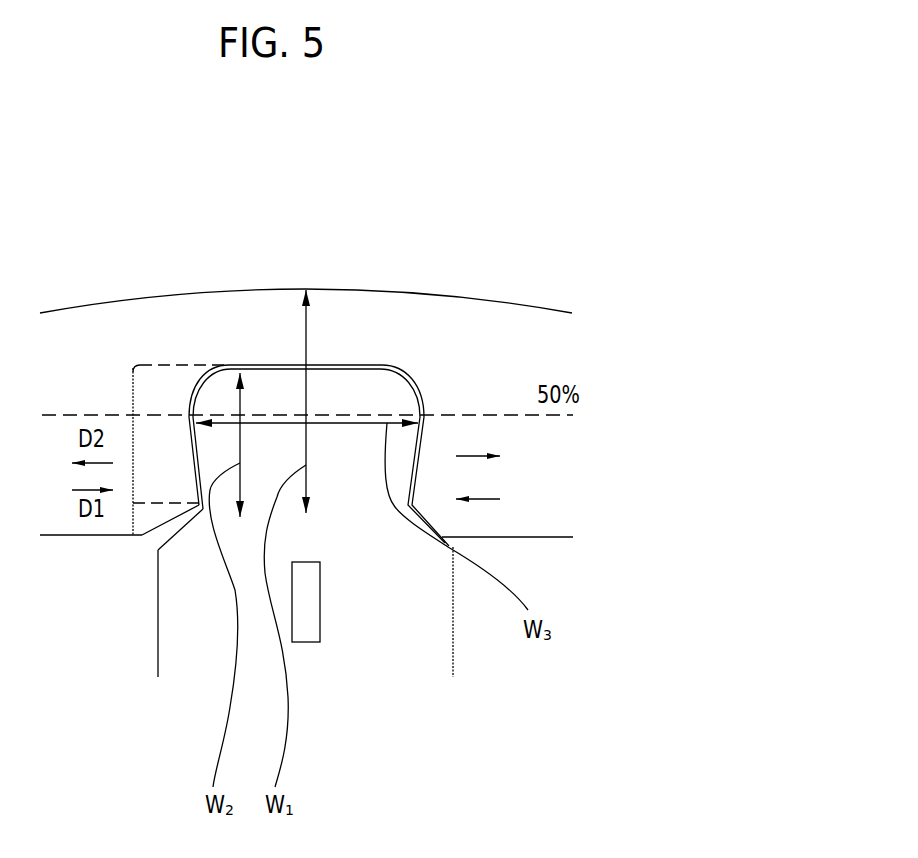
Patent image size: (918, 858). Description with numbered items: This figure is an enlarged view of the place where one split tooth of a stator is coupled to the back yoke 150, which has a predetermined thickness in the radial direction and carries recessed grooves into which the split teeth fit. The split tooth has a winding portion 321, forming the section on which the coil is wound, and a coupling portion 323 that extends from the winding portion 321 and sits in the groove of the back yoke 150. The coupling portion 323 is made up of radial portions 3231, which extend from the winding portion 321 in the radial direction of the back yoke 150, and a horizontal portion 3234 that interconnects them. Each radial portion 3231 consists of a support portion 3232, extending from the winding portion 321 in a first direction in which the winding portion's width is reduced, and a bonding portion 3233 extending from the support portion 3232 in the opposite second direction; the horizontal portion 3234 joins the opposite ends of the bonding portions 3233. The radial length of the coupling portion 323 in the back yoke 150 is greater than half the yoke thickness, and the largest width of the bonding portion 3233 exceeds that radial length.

The back yoke 150 is at (438, 318).
The coupling portion 323 is at (356, 412).
The horizontal portion 3234 is at (267, 364).
The bonding portion 3233 is at (130, 437).
The radial portion 3231 is at (418, 473).
The support portion 3232 is at (128, 497).
The winding portion 321 is at (422, 633).